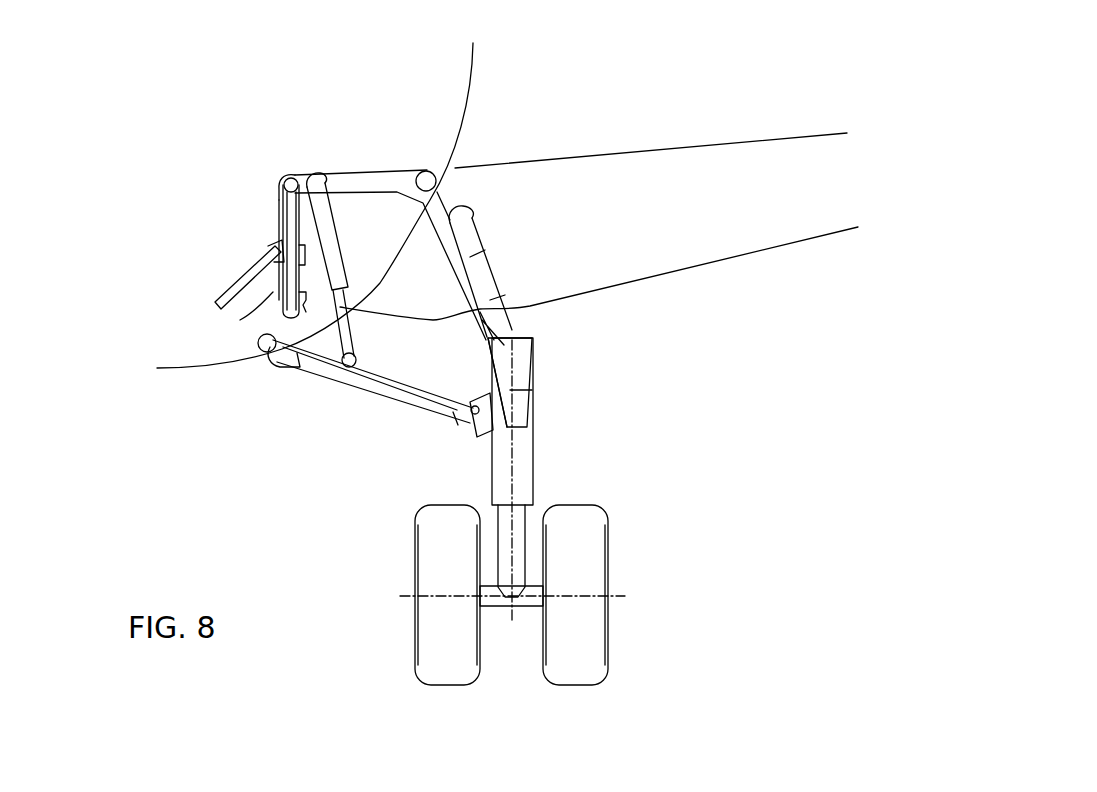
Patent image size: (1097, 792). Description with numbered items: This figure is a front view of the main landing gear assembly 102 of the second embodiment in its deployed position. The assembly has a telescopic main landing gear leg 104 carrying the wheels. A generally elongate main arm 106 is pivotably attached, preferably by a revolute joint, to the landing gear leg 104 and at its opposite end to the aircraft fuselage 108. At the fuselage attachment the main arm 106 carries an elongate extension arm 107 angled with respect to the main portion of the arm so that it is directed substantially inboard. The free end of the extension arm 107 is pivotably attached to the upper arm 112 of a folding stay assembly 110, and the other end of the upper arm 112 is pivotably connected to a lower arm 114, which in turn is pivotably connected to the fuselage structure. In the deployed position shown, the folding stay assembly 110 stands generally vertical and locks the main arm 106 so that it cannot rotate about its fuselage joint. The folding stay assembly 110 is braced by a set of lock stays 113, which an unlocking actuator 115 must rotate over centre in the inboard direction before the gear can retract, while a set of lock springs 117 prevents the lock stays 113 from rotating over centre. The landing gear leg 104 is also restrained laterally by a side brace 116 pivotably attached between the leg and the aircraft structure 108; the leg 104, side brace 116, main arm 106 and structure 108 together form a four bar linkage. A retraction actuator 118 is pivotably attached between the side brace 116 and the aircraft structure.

The main landing gear assembly 102 is at (250, 444).
The telescopic main landing gear leg 104 is at (524, 438).
The main arm 106 is at (487, 262).
The extension arm 107 is at (381, 188).
The aircraft fuselage 108 is at (470, 90).
The folding stay assembly 110 is at (268, 216).
The upper arm 112 is at (285, 228).
The lock stays 113 is at (250, 287).
The lower arm 114 is at (282, 292).
The unlocking actuator 115 is at (314, 306).
The side brace 116 is at (395, 405).
The lock springs 117 is at (273, 292).
The retraction actuator 118 is at (340, 240).